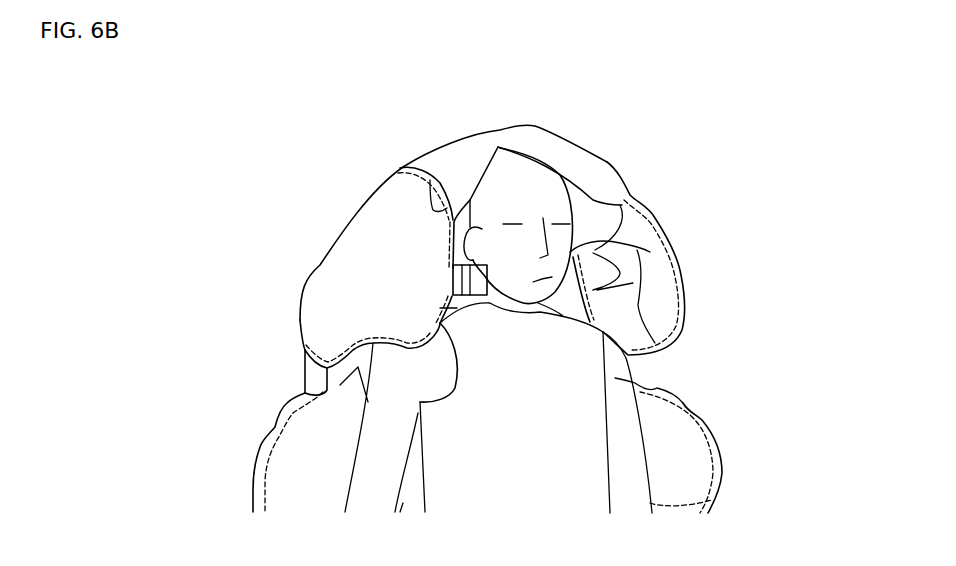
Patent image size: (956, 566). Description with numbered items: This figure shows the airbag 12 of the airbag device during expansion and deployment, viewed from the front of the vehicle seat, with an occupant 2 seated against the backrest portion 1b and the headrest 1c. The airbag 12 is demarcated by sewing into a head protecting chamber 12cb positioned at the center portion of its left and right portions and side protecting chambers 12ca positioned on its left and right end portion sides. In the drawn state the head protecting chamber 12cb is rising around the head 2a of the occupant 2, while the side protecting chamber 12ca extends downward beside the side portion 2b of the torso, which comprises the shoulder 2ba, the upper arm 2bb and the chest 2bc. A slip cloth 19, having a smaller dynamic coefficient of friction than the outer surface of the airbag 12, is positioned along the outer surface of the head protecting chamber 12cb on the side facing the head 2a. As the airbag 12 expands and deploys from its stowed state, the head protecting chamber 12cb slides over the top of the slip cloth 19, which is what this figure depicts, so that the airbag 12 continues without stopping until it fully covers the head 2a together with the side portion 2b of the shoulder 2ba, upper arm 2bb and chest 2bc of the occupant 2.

The occupant 2 is at (800, 203).
The head 2a is at (540, 182).
The side portion 2b is at (755, 287).
The shoulder 2ba is at (583, 333).
The upper arm 2bb is at (617, 378).
The chest 2bc is at (578, 407).
The airbag 12 is at (280, 401).
The side protecting chamber 12ca is at (700, 467).
The head protecting chamber 12cb is at (405, 183).
The backrest portion 1b is at (440, 310).
The headrest 1c is at (462, 253).
The slip cloth 19 is at (570, 163).